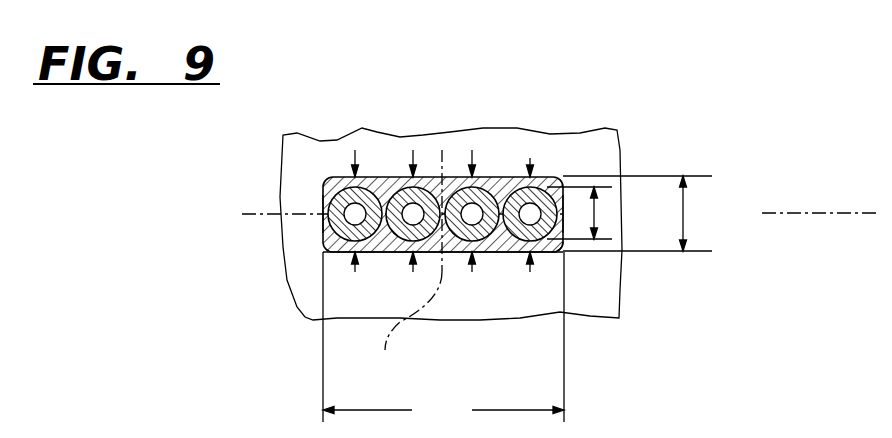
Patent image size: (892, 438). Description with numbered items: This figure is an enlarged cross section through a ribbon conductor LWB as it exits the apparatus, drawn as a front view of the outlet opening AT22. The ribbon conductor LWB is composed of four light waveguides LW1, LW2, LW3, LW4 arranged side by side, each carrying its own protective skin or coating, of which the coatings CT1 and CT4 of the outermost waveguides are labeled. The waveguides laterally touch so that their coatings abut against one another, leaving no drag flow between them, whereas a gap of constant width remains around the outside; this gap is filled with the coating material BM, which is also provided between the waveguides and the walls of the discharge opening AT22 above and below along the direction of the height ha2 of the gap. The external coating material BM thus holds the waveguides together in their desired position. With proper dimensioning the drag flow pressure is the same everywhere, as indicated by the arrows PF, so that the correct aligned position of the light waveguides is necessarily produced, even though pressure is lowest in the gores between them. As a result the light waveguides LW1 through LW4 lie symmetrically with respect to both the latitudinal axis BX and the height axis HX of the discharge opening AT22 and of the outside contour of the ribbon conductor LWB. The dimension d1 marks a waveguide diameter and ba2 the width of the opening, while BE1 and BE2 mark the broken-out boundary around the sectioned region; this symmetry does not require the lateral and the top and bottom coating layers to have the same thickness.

The light waveguide LW1 is at (333, 175).
The light waveguide LW2 is at (382, 177).
The light waveguide LW3 is at (442, 151).
The light waveguide LW4 is at (542, 177).
The ribbon conductor LWB is at (509, 266).
The coating material BM is at (429, 177).
The drag flow pressure arrows PF is at (530, 160).
The coating CT1 is at (323, 230).
The coating CT4 is at (557, 202).
The first bonding edge BE1 is at (312, 265).
The second bonding edge BE2 is at (307, 158).
The height axis HX is at (405, 267).
The latitudinal axis BX is at (813, 214).
The outlet opening AT22 is at (565, 251).
The lead wire diameter d1 is at (597, 213).
The height of the gap ha2 is at (722, 226).
The bundle width ba2 is at (443, 339).